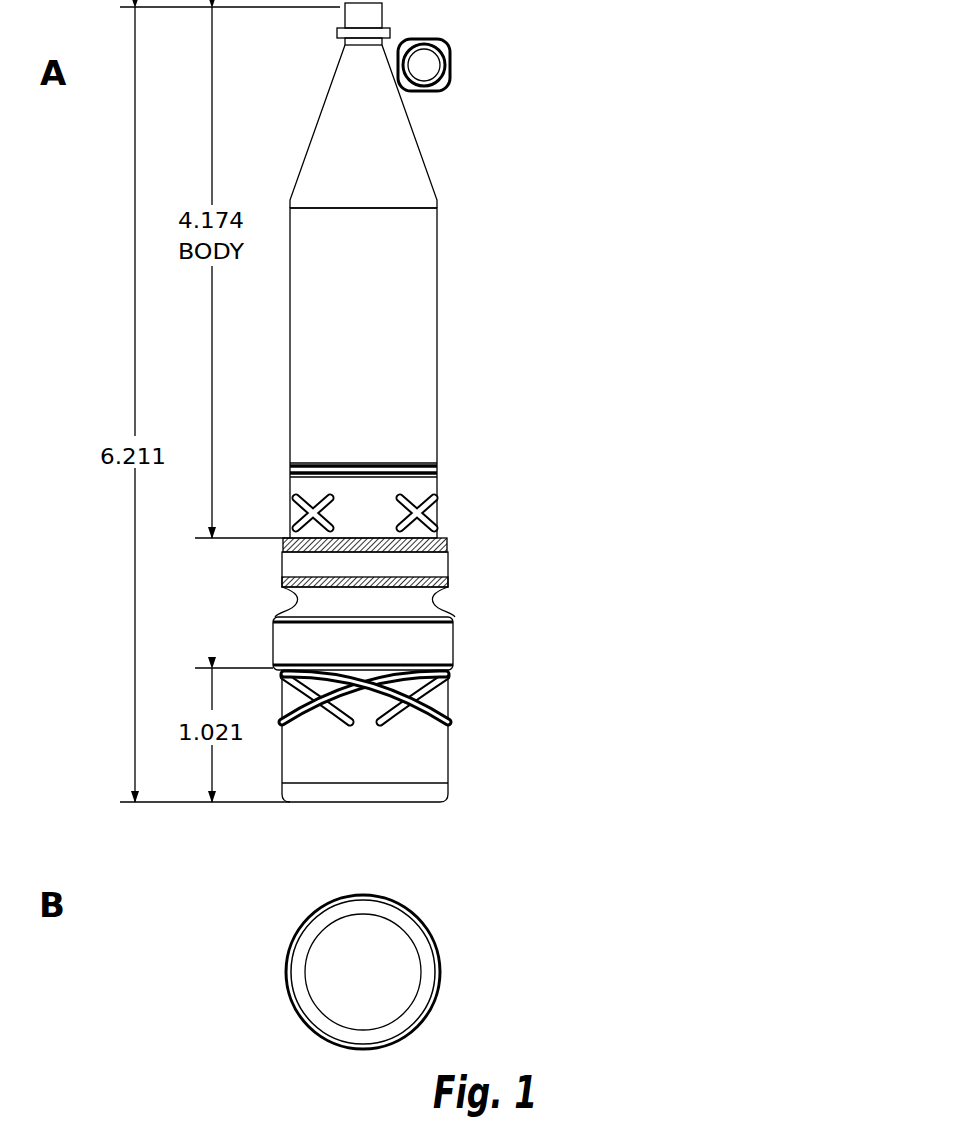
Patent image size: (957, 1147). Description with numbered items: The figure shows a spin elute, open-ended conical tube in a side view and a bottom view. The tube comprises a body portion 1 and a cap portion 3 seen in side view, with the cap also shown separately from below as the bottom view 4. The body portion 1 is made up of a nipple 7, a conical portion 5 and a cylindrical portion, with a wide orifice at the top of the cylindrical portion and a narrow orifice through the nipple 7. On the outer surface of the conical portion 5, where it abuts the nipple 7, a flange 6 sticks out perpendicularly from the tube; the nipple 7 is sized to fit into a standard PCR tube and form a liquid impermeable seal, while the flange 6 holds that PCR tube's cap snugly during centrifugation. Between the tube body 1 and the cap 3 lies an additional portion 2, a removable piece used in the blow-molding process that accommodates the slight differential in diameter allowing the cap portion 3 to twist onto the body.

The body portion 1 is at (368, 355).
The additional portion 2 is at (393, 603).
The cap portion 3 is at (393, 725).
The cap portion bottom view 4 is at (363, 972).
The conical portion 5 is at (363, 126).
The flange 6 is at (453, 65).
The nipple 7 is at (388, 15).